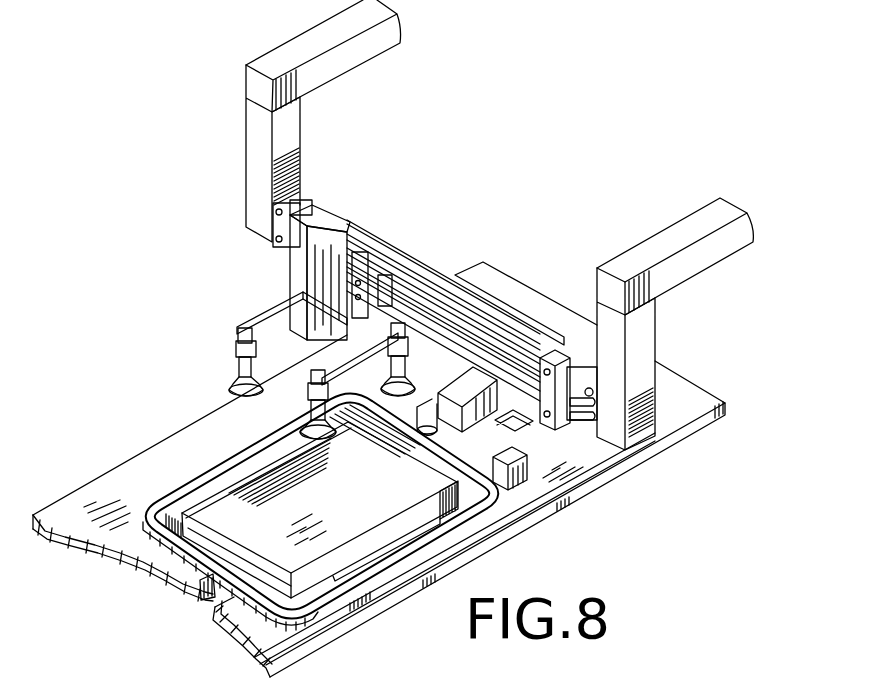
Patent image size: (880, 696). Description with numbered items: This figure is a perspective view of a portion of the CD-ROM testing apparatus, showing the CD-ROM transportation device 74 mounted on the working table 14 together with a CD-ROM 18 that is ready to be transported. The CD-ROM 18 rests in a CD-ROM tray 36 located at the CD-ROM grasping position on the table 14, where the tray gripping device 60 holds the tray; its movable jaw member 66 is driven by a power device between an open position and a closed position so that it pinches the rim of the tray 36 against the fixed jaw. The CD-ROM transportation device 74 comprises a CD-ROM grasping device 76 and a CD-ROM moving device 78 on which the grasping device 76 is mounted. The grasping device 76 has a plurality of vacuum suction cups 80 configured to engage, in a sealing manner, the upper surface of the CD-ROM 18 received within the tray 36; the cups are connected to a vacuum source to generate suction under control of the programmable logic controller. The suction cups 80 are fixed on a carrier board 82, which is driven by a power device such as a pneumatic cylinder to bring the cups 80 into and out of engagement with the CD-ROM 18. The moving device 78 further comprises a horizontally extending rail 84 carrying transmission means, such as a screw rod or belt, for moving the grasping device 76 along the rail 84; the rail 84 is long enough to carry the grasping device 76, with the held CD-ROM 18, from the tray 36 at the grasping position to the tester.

The working table 14 is at (607, 460).
The CD-ROM 18 is at (280, 503).
The CD-ROM tray 36 is at (168, 487).
The tray gripping device 60 is at (458, 366).
The movable jaw member 66 is at (484, 508).
The CD-ROM transportation device 74 is at (242, 163).
The CD-ROM grasping device 76 is at (292, 288).
The CD-ROM moving device 78 is at (393, 232).
The vacuum suction cups 80 is at (231, 392).
The carrier board 82 is at (272, 322).
The horizontally extending rail 84 is at (425, 268).